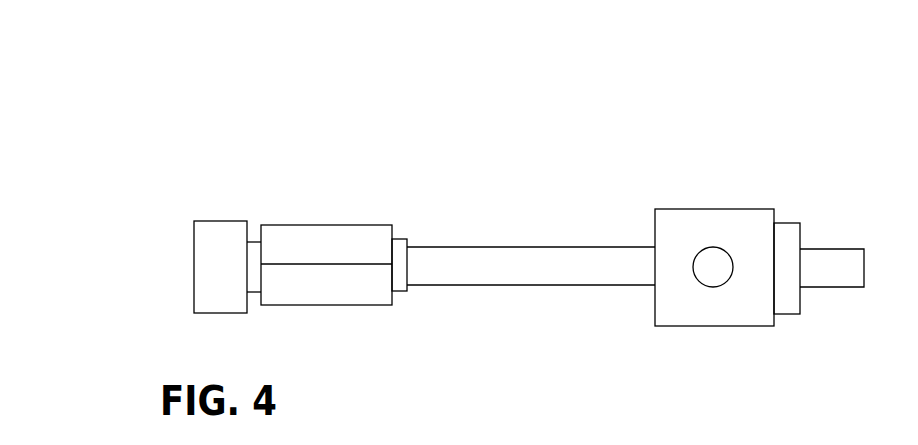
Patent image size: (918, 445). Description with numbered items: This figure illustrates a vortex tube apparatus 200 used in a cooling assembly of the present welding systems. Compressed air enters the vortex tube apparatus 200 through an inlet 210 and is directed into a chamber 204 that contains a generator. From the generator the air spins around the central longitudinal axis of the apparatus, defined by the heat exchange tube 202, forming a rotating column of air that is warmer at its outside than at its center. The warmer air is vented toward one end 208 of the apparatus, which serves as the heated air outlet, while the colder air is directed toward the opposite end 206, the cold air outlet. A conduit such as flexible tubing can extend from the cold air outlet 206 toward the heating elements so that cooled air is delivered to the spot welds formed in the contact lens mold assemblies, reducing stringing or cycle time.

The vortex tube apparatus 200 is at (368, 161).
The heat exchange tube 202 is at (399, 206).
The chamber 204 is at (643, 203).
The cold air outlet 206 is at (780, 211).
The heated air outlet 208 is at (145, 220).
The inlet 210 is at (669, 197).